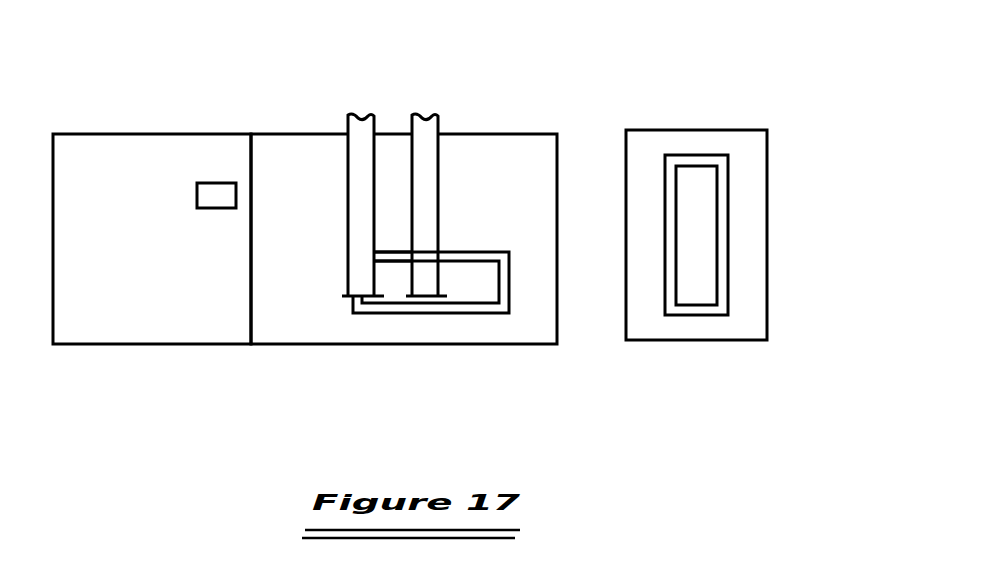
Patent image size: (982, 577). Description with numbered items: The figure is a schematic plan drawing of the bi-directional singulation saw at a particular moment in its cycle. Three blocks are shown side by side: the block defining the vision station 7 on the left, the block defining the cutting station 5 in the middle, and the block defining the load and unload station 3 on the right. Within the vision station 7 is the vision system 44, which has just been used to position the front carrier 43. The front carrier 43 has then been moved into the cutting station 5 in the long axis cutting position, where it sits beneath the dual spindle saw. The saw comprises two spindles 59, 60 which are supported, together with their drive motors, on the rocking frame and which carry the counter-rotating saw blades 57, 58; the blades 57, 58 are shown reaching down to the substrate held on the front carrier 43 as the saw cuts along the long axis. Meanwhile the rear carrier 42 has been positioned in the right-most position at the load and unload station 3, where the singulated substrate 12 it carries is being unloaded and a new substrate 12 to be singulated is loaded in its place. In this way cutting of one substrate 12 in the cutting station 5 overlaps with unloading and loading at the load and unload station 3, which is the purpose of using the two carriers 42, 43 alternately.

The load and unload station 3 is at (722, 130).
The cutting station 5 is at (523, 133).
The vision station 7 is at (110, 133).
The substrate 12 is at (703, 190).
The rear carrier 42 is at (728, 207).
The front carrier 43 is at (485, 315).
The vision system 44 is at (210, 208).
The saw blade 57 is at (427, 300).
The saw blade 58 is at (368, 300).
The spindle 59 is at (450, 240).
The spindle 60 is at (339, 263).